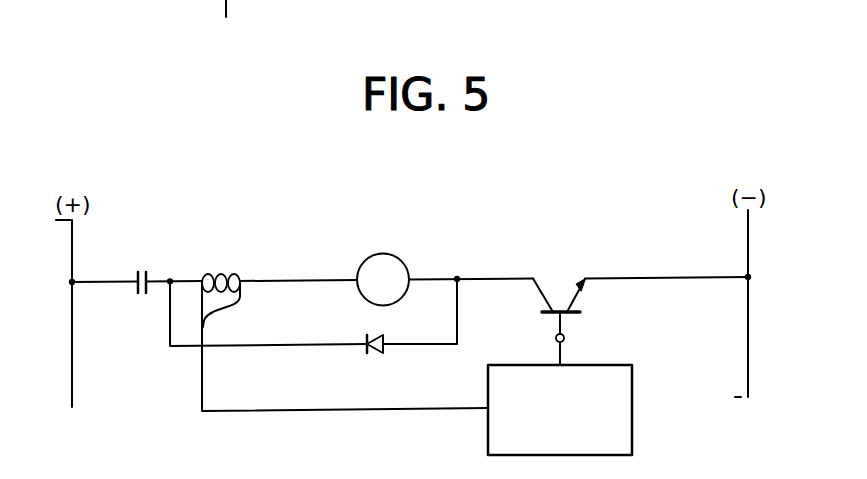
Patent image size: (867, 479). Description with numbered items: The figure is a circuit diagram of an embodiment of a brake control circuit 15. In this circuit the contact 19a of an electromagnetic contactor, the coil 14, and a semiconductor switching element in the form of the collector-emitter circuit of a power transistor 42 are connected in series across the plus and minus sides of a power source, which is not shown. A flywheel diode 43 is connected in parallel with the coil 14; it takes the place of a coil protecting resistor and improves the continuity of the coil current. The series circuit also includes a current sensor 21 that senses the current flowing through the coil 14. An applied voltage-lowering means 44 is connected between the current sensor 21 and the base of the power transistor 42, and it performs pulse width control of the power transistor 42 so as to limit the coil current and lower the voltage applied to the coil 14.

The brake control circuit 15 is at (196, 472).
The contact 19a is at (147, 273).
The current sensor 21 is at (223, 274).
The coil 14 is at (398, 254).
The flywheel diode 43 is at (387, 352).
The power transistor 42 is at (571, 312).
The applied voltage-lowering means 44 is at (632, 407).